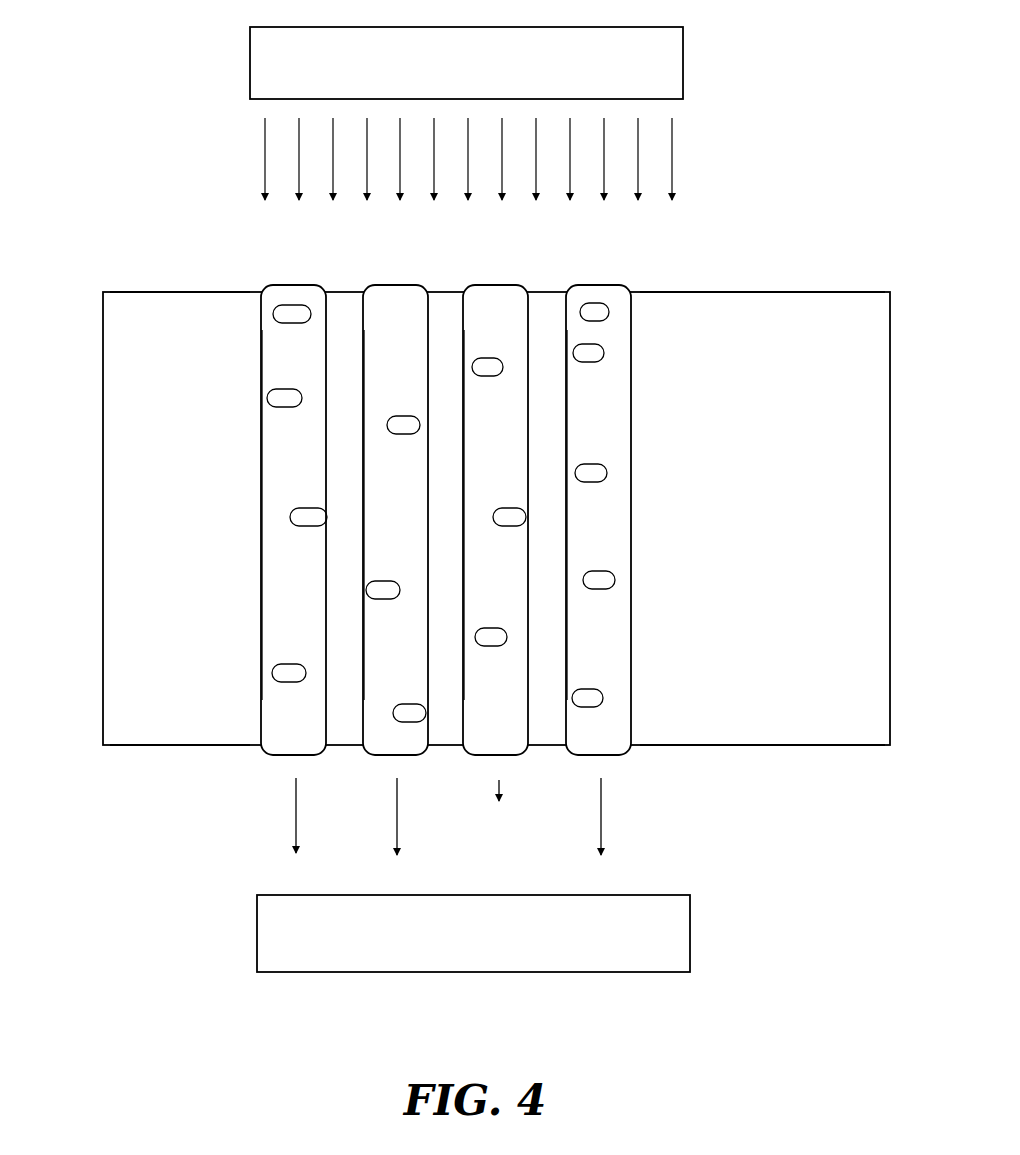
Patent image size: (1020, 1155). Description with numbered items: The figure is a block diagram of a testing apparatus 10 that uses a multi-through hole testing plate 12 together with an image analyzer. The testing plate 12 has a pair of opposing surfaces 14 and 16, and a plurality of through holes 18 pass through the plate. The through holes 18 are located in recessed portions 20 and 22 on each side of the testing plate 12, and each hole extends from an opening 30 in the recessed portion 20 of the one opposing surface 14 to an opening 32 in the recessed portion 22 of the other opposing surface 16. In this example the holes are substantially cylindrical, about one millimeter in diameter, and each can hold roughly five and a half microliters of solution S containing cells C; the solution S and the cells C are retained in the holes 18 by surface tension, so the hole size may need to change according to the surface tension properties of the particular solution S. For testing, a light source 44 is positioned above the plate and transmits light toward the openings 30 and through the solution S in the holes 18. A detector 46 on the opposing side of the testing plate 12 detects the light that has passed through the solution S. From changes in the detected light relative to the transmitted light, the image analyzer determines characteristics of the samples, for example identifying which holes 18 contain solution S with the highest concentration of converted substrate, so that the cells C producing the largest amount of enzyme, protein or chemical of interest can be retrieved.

The testing apparatus 10 is at (92, 253).
The testing plate 12 is at (116, 372).
The opposing surface 14 is at (163, 291).
The opposing surface 16 is at (161, 746).
The through holes 18 is at (305, 614).
The recessed portion 20 is at (771, 291).
The recessed portion 22 is at (796, 747).
The openings 30 is at (279, 276).
The openings 32 is at (288, 758).
The light source 44 is at (262, 68).
The detector 46 is at (270, 938).
The cells C is at (290, 313).
The solution S is at (303, 748).